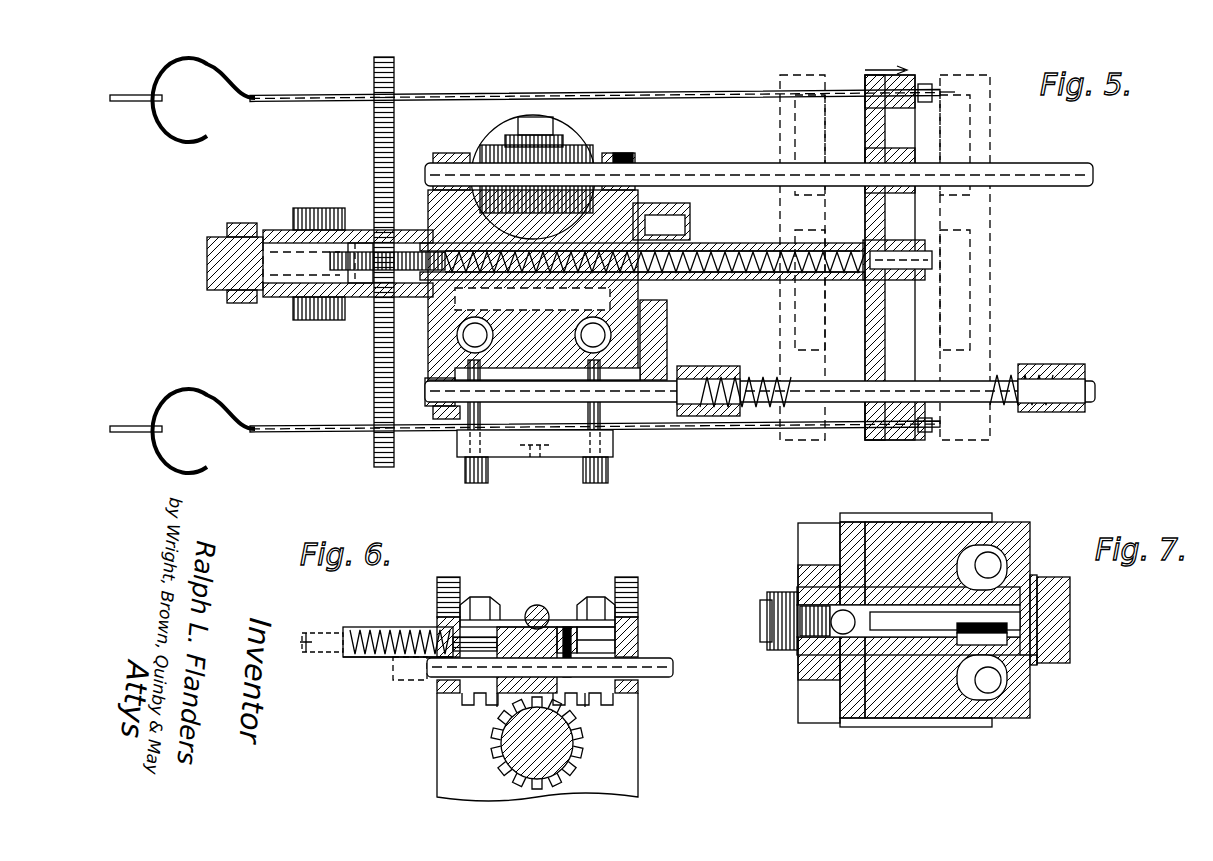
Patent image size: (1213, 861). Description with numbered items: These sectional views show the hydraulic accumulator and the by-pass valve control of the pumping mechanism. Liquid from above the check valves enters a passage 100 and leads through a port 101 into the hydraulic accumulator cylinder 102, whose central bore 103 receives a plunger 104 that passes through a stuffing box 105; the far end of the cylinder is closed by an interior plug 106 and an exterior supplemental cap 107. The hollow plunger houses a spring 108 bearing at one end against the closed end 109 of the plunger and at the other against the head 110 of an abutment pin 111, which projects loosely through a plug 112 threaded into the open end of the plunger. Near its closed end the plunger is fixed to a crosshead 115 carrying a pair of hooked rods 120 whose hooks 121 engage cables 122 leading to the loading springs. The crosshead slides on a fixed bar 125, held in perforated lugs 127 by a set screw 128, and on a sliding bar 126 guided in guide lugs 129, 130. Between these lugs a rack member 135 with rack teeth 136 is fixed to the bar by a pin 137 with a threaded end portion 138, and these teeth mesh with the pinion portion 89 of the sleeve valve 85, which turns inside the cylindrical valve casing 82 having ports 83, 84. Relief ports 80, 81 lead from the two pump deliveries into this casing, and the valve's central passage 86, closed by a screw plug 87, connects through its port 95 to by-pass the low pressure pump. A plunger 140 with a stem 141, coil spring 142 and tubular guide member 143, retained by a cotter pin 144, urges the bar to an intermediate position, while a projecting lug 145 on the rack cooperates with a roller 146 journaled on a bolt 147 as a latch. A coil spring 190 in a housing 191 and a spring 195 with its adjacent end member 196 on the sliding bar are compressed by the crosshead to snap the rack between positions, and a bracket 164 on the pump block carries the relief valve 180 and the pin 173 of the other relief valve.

In FIG. 7, the relief port 80 is at (988, 695).
In FIG. 7, the relief port 81 is at (995, 553).
In FIG. 7, the cylindrical valve casing 82 is at (905, 655).
In FIG. 7, the port 83 is at (995, 650).
In FIG. 7, the port 84 is at (1000, 590).
In FIG. 7, the sleeve valve 85 is at (820, 640).
In FIG. 7, the central passage 86 is at (908, 621).
In FIG. 5, the screw plug 87 is at (552, 147).
In FIG. 7, the screw plug 87 is at (778, 600).
In FIG. 6, the pinion portion 89 is at (578, 762).
In FIG. 7, the pinion portion 89 is at (1055, 635).
In FIG. 7, the port 95 is at (1000, 640).
In FIG. 5, the passage 100 is at (577, 335).
In FIG. 5, the port 101 is at (535, 290).
In FIG. 5, the hydraulic accumulator cylinder 102 is at (285, 305).
In FIG. 5, the central bore 103 is at (290, 230).
In FIG. 5, the plunger 104 is at (430, 210).
In FIG. 5, the stuffing box 105 is at (690, 240).
In FIG. 5, the plug 106 is at (230, 303).
In FIG. 5, the supplemental cap 107 is at (207, 262).
In FIG. 5, the spring 108 is at (742, 280).
In FIG. 5, the closed end 109 is at (860, 243).
In FIG. 5, the head 110 is at (380, 320).
In FIG. 5, the abutment pin 111 is at (355, 300).
In FIG. 5, the plug 112 is at (360, 235).
In FIG. 5, the crosshead 115 is at (872, 302).
In FIG. 5, the hooked rods 120 is at (690, 92).
In FIG. 5, the hooks 121 is at (205, 64).
In FIG. 5, the cables 122 is at (140, 104).
In FIG. 5, the bar 125 is at (1012, 163).
In FIG. 5, the bar 126 is at (1090, 382).
In FIG. 6, the bar 126 is at (673, 667).
In FIG. 5, the perforated lugs 127 is at (450, 153).
In FIG. 5, the set screw 128 is at (620, 153).
In FIG. 5, the guide lug 129 is at (435, 380).
In FIG. 6, the guide lug 129 is at (440, 690).
In FIG. 5, the guide lug 130 is at (640, 375).
In FIG. 6, the guide lug 130 is at (640, 690).
In FIG. 6, the rack member 135 is at (585, 698).
In FIG. 6, the rack teeth 136 is at (510, 700).
In FIG. 6, the pin 137 is at (615, 642).
In FIG. 6, the threaded end portion 138 is at (615, 612).
In FIG. 6, the plunger 140 is at (478, 620).
In FIG. 6, the stem 141 is at (450, 625).
In FIG. 6, the coil spring 142 is at (385, 620).
In FIG. 6, the tubular guide member 143 is at (358, 657).
In FIG. 6, the cotter pin 144 is at (318, 633).
In FIG. 6, the projecting lug 145 is at (548, 627).
In FIG. 6, the roller 146 is at (542, 605).
In FIG. 6, the bolt 147 is at (568, 627).
In FIG. 5, the bracket 164 is at (545, 457).
In FIG. 5, the pin 173 is at (608, 478).
In FIG. 5, the relief valve 180 is at (465, 478).
In FIG. 5, the coil spring 190 is at (762, 378).
In FIG. 5, the housing 191 is at (710, 367).
In FIG. 5, the spring 195 is at (1002, 376).
In FIG. 5, the nut 196 is at (1062, 364).